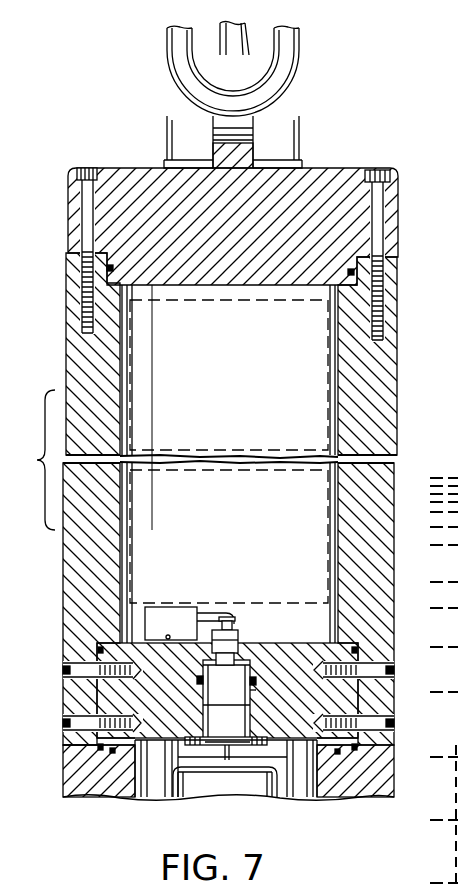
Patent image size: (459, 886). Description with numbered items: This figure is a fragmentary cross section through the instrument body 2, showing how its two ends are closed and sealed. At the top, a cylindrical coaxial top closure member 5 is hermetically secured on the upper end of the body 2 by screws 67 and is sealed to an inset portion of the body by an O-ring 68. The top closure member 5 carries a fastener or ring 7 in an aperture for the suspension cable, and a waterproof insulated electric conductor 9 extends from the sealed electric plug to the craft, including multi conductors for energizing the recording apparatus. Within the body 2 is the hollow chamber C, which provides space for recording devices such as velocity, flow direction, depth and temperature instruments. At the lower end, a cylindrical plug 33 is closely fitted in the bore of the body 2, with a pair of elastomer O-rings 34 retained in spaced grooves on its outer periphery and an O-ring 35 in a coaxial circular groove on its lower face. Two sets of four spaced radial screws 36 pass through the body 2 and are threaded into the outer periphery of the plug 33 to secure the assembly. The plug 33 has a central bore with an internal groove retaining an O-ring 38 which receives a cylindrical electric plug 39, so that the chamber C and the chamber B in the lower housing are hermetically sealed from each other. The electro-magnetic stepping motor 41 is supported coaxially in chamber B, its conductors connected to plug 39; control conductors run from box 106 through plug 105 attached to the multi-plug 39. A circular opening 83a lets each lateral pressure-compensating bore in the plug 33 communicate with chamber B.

The top closure member 5 is at (346, 156).
The body 2 is at (67, 338).
The fastener or ring 7 is at (300, 41).
The electric conductor 9 is at (232, 45).
The screws 67 is at (88, 168).
The O-ring 68 is at (113, 268).
The chamber C is at (222, 371).
The cylindrical plug 33 is at (290, 652).
The O-rings 34 is at (48, 779).
The O-ring 35 is at (97, 779).
The radial screws 36 is at (62, 720).
The O-ring 38 is at (197, 680).
The electric plug 39 is at (254, 692).
The electro-magnetic stepping motor 41 is at (212, 783).
The circular opening 83a is at (187, 742).
The plug 105 is at (238, 633).
The box 106 is at (167, 615).
The chamber B is at (302, 792).